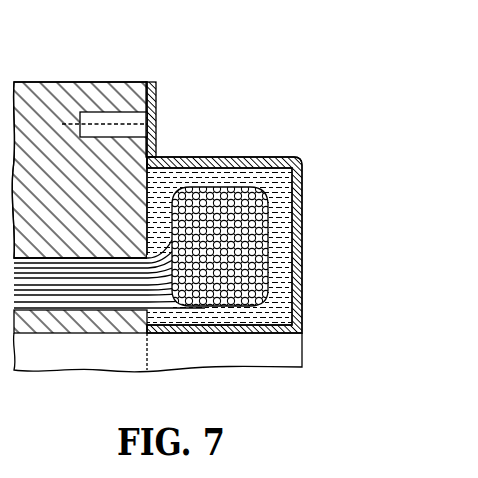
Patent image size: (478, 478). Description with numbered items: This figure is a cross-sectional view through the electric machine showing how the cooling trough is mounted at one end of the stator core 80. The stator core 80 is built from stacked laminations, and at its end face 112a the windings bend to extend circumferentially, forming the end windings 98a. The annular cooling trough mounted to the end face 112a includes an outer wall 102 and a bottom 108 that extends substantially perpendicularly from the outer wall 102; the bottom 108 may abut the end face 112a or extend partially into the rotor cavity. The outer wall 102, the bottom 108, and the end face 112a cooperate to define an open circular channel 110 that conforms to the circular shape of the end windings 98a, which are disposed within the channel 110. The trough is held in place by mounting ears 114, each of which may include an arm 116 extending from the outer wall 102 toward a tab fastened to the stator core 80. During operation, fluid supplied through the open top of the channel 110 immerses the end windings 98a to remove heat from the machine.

The stator core 80 is at (88, 193).
The end windings 98a is at (226, 308).
The outer wall 102 is at (302, 217).
The bottom 108 is at (247, 333).
The open circular channel 110 is at (277, 257).
The end face 112a is at (147, 316).
The mounting ears 114 is at (157, 97).
The arm 116 is at (247, 157).